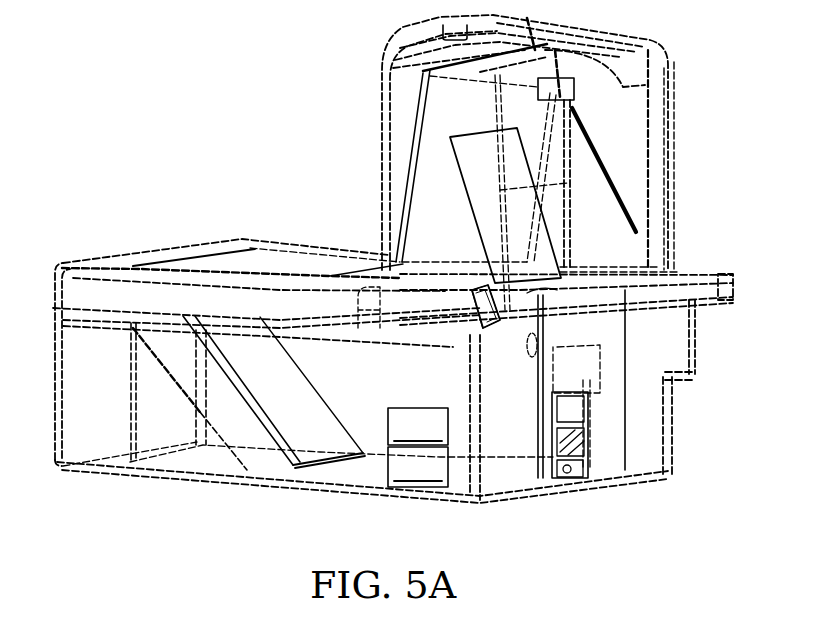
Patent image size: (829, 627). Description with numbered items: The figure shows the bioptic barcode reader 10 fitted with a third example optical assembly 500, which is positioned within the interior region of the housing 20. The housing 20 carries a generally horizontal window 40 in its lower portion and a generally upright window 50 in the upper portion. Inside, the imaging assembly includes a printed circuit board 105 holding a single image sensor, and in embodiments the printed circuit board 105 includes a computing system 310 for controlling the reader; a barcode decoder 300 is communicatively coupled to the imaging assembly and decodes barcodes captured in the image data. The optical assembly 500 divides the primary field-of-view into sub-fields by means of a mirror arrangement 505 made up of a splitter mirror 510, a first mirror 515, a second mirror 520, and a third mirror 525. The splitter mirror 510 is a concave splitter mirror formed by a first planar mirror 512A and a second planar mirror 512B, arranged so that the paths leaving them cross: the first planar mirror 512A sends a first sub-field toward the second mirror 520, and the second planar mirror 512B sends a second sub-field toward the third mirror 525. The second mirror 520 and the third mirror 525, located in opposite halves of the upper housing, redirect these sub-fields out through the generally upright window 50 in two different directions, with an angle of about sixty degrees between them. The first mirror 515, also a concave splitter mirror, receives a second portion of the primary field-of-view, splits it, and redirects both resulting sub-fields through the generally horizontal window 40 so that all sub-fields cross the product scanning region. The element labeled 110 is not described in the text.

The bioptic barcode reader 10 is at (205, 92).
The housing 20 is at (672, 61).
The generally horizontal window 40 is at (248, 251).
The generally upright window 50 is at (413, 162).
The printed circuit board 105 is at (622, 430).
The imaging module 110 is at (527, 390).
The barcode decoder 300 is at (540, 458).
The computing system 310 is at (553, 470).
The optical assembly 500 is at (476, 341).
The mirror arrangement 505 is at (486, 306).
The splitter mirror 510 is at (487, 353).
The first planar mirror 512A is at (603, 300).
The second planar mirror 512B is at (493, 336).
The first mirror 515 is at (328, 463).
The second mirror 520 is at (538, 233).
The third mirror 525 is at (590, 130).